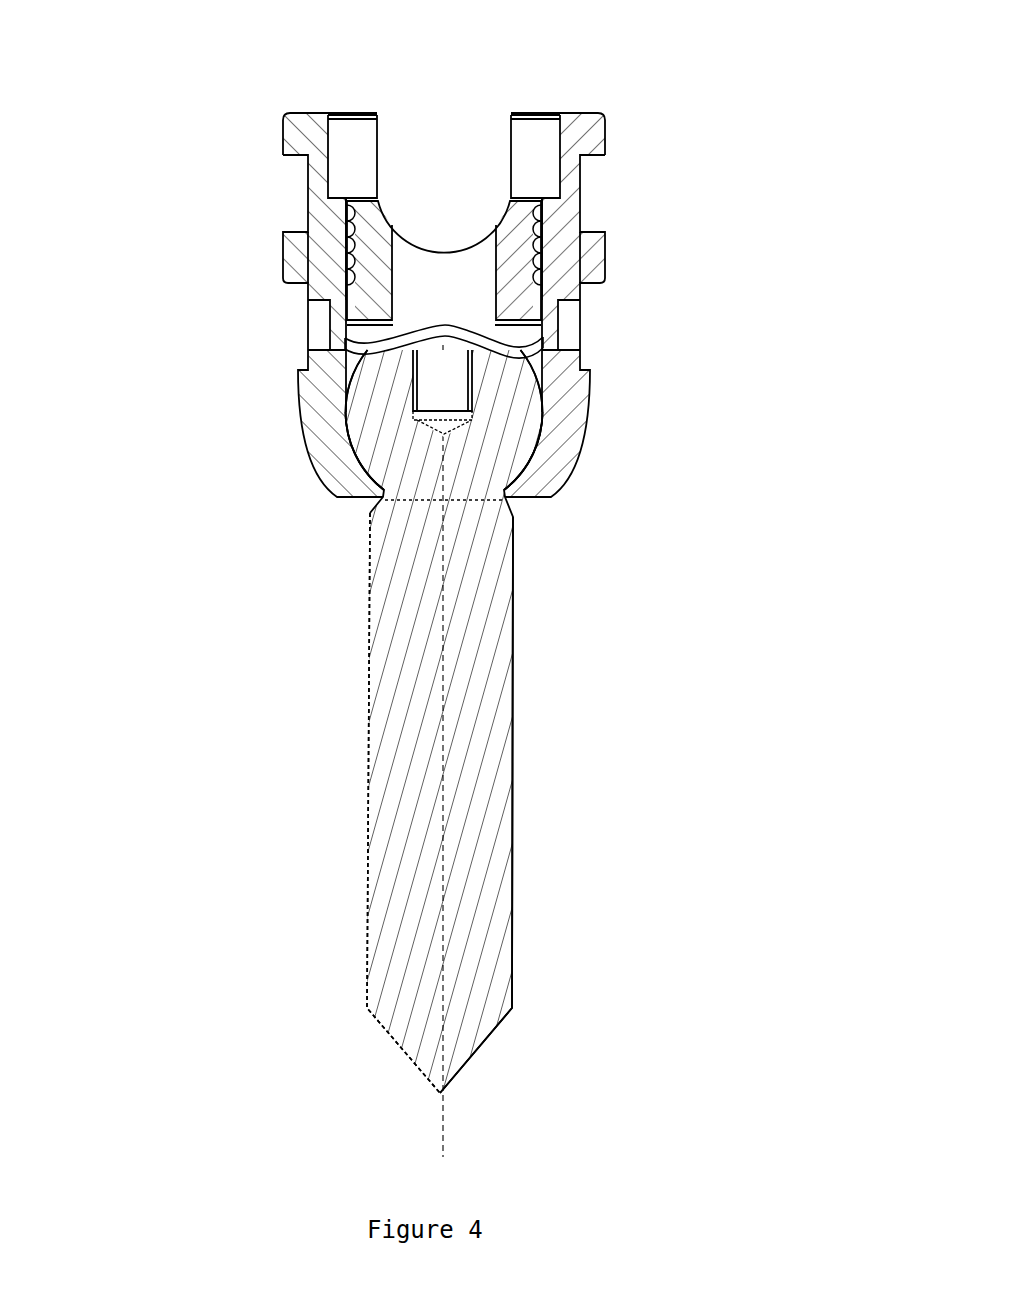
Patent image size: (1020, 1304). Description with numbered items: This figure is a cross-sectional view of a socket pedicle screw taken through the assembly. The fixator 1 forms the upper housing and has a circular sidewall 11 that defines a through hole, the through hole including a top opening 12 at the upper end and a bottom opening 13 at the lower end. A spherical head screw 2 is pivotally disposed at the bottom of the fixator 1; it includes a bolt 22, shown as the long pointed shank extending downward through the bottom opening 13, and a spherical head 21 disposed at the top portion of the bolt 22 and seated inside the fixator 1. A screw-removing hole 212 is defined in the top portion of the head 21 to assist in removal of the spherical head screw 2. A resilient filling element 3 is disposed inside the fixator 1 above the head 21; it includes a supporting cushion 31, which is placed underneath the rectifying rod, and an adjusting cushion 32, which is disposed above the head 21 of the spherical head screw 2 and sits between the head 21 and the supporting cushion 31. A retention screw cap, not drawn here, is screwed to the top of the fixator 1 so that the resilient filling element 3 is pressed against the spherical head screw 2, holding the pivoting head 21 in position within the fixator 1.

The fixator 1 is at (272, 366).
The circular sidewall 11 is at (323, 252).
The top opening 12 is at (417, 138).
The bottom opening 13 is at (372, 508).
The spherical head screw 2 is at (513, 592).
The spherical head 21 is at (495, 447).
The screw-removing hole 212 is at (452, 370).
The bolt 22 is at (472, 733).
The resilient filling element 3 is at (533, 268).
The supporting cushion 31 is at (527, 213).
The adjusting cushion 32 is at (538, 328).